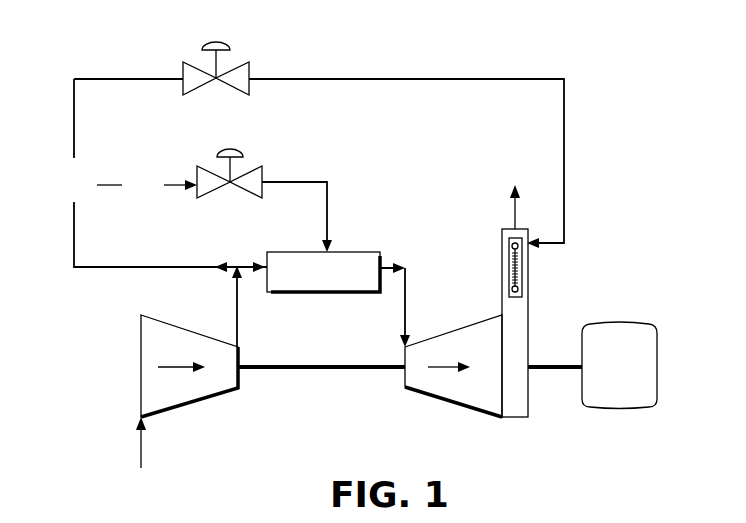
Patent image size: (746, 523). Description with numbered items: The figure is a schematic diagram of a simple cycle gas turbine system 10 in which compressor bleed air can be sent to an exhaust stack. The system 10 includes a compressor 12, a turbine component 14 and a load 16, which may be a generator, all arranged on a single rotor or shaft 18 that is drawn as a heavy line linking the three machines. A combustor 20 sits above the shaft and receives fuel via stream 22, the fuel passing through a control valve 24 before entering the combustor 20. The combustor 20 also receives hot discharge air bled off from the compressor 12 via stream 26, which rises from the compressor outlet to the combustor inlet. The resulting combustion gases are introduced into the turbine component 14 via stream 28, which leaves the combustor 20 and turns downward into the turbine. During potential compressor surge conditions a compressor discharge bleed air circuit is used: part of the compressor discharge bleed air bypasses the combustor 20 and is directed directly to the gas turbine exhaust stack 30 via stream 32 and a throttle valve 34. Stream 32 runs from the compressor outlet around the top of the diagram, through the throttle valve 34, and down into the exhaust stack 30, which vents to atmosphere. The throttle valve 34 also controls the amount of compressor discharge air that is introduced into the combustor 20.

The simple cycle gas turbine system 10 is at (652, 120).
The compressor 12 is at (180, 412).
The turbine component 14 is at (443, 388).
The load 16 is at (622, 330).
The shaft 18 is at (318, 362).
The combustor 20 is at (345, 252).
The fuel stream 22 is at (295, 182).
The control valve 24 is at (264, 147).
The compressor discharge air stream 26 is at (237, 315).
The combustion gas stream 28 is at (406, 310).
The exhaust stack 30 is at (527, 299).
The bleed air stream 32 is at (73, 262).
The throttle valve 34 is at (246, 38).